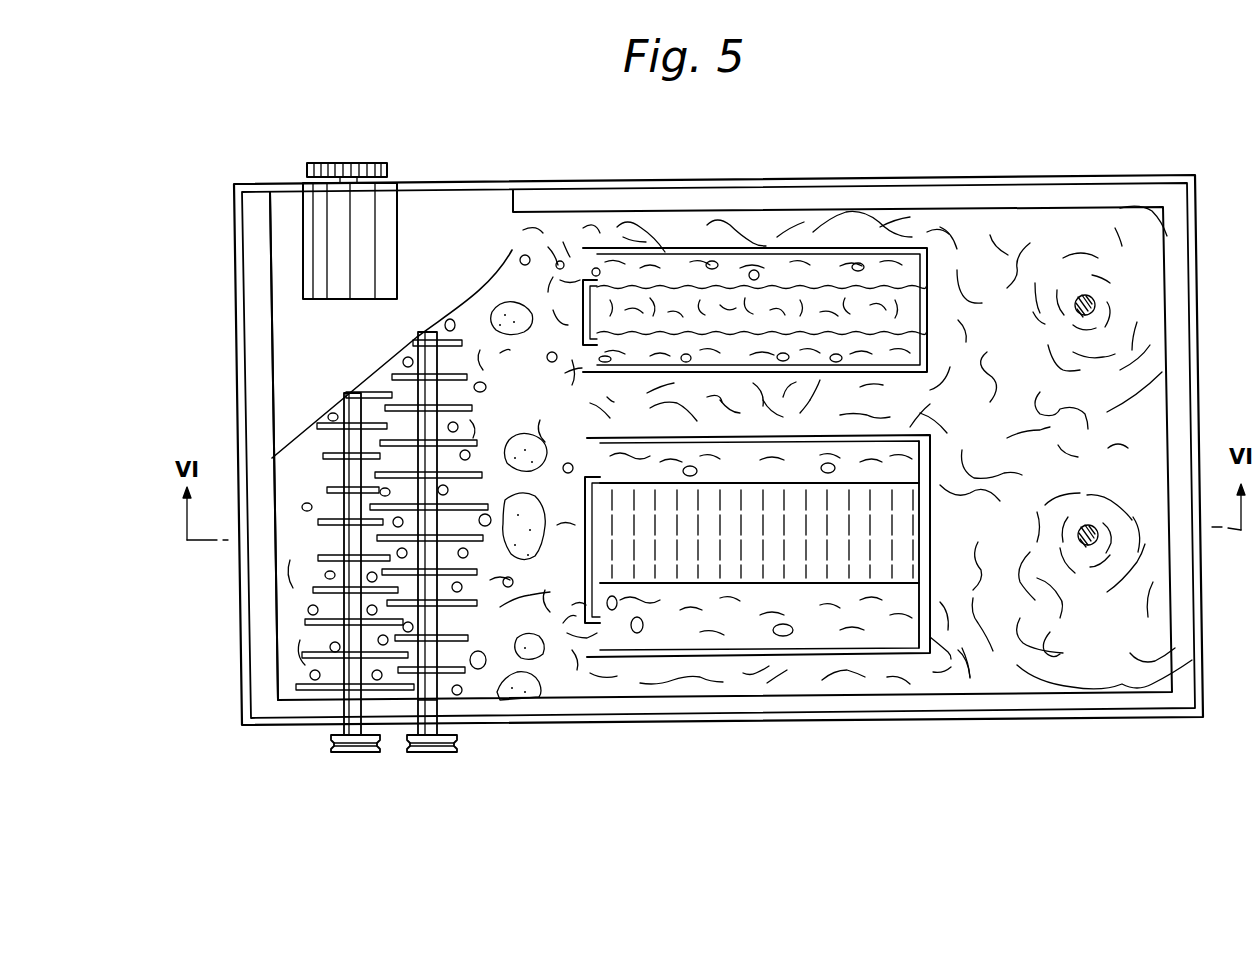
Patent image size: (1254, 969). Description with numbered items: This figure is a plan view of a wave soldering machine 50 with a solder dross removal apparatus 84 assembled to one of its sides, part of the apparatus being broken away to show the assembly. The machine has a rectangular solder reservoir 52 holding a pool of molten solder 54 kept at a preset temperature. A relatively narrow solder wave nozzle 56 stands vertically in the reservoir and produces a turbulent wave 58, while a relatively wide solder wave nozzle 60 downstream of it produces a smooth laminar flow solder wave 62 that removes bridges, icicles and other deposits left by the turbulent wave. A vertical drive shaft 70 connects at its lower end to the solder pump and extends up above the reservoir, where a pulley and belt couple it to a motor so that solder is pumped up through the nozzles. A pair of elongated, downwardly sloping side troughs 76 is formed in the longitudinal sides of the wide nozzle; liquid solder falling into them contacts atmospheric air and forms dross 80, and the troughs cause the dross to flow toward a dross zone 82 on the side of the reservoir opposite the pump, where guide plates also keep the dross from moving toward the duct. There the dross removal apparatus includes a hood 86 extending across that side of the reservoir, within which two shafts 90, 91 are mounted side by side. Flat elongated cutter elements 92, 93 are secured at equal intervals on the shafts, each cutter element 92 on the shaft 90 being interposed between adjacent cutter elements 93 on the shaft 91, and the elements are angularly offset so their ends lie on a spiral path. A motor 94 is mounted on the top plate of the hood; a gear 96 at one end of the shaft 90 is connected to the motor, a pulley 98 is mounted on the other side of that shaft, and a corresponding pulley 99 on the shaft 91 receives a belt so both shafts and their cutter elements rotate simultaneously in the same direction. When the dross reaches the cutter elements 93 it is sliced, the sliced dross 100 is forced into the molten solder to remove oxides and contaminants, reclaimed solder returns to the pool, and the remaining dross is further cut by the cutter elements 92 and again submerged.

The wave soldering machine 50 is at (889, 130).
The solder reservoir 52 is at (727, 183).
The molten solder 54 is at (1047, 628).
The narrow solder wave nozzle 56 is at (925, 272).
The turbulent wave 58 is at (663, 300).
The wide solder wave nozzle 60 is at (932, 600).
The smooth laminar flow solder wave 62 is at (836, 575).
The vertical drive shaft 70 is at (1105, 523).
The side troughs 76 is at (872, 455).
The dross 80 is at (535, 690).
The dross zone 82 is at (310, 557).
The solder dross removal apparatus 84 is at (397, 752).
The hood 86 is at (293, 357).
The shaft 90 is at (357, 702).
The shaft 91 is at (440, 705).
The cutter elements 92 is at (300, 623).
The cutter elements 93 is at (452, 326).
The motor 94 is at (382, 212).
The gear 96 is at (345, 163).
The pulley 98 is at (332, 740).
The pulley 99 is at (458, 745).
The sliced dross 100 is at (408, 625).